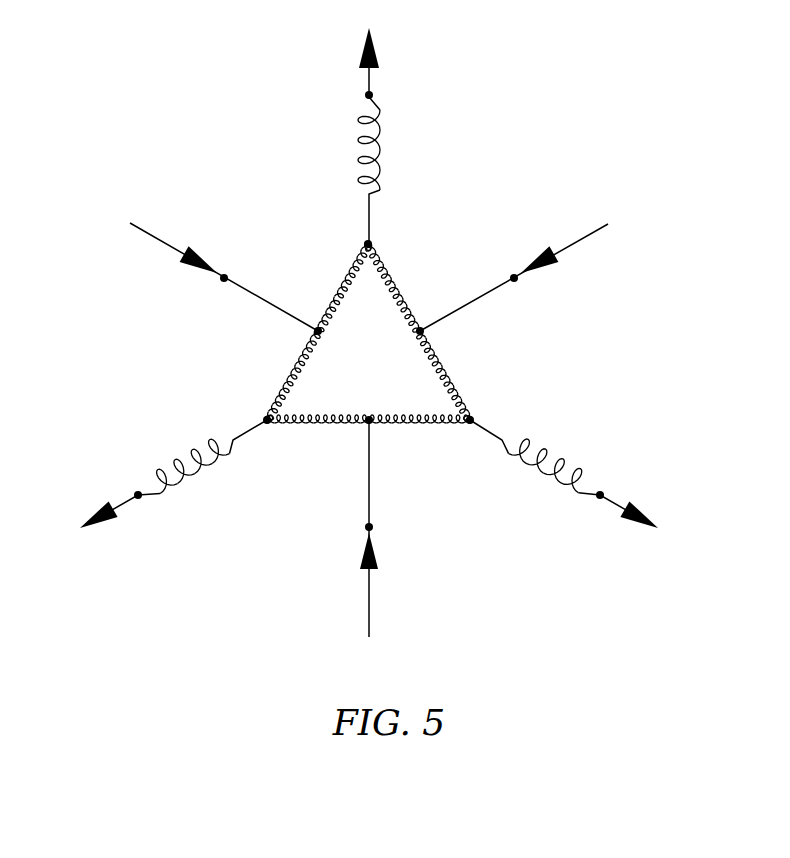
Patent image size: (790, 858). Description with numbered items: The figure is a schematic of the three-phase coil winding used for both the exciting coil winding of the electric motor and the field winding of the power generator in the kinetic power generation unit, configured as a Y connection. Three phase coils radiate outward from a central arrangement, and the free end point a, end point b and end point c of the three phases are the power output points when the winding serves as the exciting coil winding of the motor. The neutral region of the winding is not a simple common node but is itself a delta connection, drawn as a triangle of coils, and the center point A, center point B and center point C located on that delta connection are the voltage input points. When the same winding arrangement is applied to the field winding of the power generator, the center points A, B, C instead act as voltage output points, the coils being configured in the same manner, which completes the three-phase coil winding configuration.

The end point a is at (369, 122).
The end point b is at (575, 485).
The end point c is at (163, 485).
The center point A is at (212, 268).
The center point B is at (526, 268).
The center point C is at (369, 548).